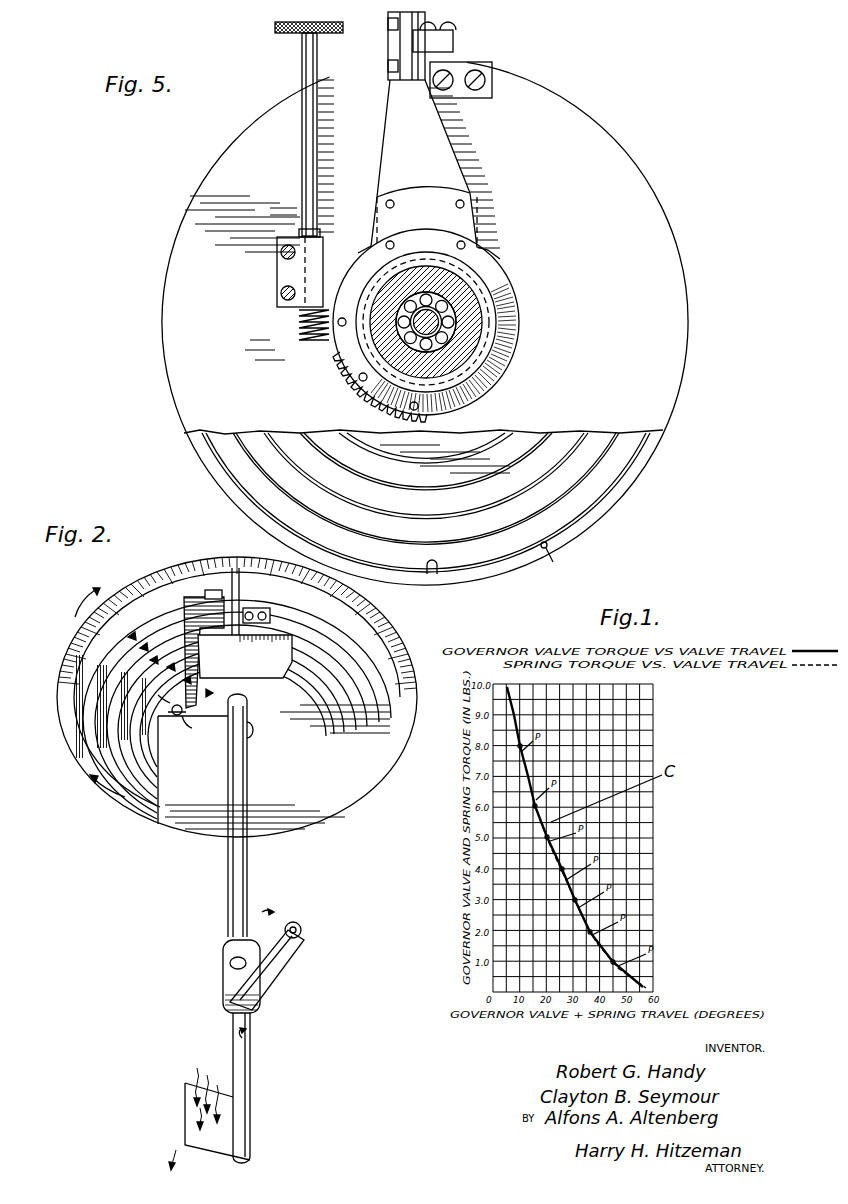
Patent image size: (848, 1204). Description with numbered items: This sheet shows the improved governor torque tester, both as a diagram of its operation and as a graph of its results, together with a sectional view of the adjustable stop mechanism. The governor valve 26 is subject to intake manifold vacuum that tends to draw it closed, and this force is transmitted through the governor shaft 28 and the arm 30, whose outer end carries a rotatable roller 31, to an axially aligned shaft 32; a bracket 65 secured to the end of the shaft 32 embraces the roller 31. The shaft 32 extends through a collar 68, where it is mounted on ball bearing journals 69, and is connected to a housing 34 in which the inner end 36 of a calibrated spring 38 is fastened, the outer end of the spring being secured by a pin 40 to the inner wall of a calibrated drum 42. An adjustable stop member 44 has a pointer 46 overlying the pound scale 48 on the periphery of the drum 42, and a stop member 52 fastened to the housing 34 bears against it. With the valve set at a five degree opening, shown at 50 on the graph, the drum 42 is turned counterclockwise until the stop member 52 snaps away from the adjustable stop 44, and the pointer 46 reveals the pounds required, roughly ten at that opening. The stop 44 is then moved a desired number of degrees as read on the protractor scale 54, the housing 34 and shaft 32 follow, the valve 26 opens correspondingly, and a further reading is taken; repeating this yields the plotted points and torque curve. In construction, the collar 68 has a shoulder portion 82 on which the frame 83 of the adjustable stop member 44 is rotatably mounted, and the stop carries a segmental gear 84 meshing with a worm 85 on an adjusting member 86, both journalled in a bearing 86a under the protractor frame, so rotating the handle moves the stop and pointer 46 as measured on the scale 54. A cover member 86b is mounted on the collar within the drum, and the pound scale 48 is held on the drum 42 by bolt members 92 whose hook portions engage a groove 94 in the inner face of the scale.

In FIG. 2, the governor valve 26 is at (185, 1127).
In FIG. 2, the governor shaft 28 is at (252, 1070).
In FIG. 2, the arm 30 is at (263, 970).
In FIG. 2, the roller 31 is at (301, 927).
In FIG. 5, the shaft 32 is at (427, 318).
In FIG. 2, the shaft 32 is at (232, 872).
In FIG. 2, the housing 34 is at (301, 810).
In FIG. 2, the inner end of spring 36 is at (181, 718).
In FIG. 5, the calibrated spring 38 is at (600, 474).
In FIG. 2, the calibrated spring 38 is at (117, 728).
In FIG. 2, the pin 40 is at (128, 767).
In FIG. 2, the calibrated drum 42 is at (147, 581).
In FIG. 5, the adjustable stop member 44 is at (395, 122).
In FIG. 2, the adjustable stop member 44 is at (221, 603).
In FIG. 5, the pointer 46 is at (400, 40).
In FIG. 2, the pointer 46 is at (215, 592).
In FIG. 2, the pound scale 48 is at (380, 611).
In FIG. 1, the point on graph 50 is at (507, 690).
In FIG. 5, the stop member 52 is at (432, 30).
In FIG. 2, the stop member 52 is at (235, 570).
In FIG. 2, the protractor scale 54 is at (288, 653).
In FIG. 2, the bracket 65 is at (237, 938).
In FIG. 5, the collar 68 is at (478, 358).
In FIG. 5, the ball bearing journals 69 is at (440, 350).
In FIG. 5, the shoulder portion 82 is at (488, 342).
In FIG. 5, the frame 83 is at (512, 296).
In FIG. 5, the segmental gear 84 is at (342, 377).
In FIG. 5, the worm 85 is at (298, 326).
In FIG. 5, the adjusting member 86 is at (283, 36).
In FIG. 5, the bearing 86a is at (278, 270).
In FIG. 5, the cover member 86b is at (690, 340).
In FIG. 2, the cover member 86b is at (370, 775).
In FIG. 5, the bolt members 92 is at (437, 575).
In FIG. 5, the groove 94 is at (548, 564).